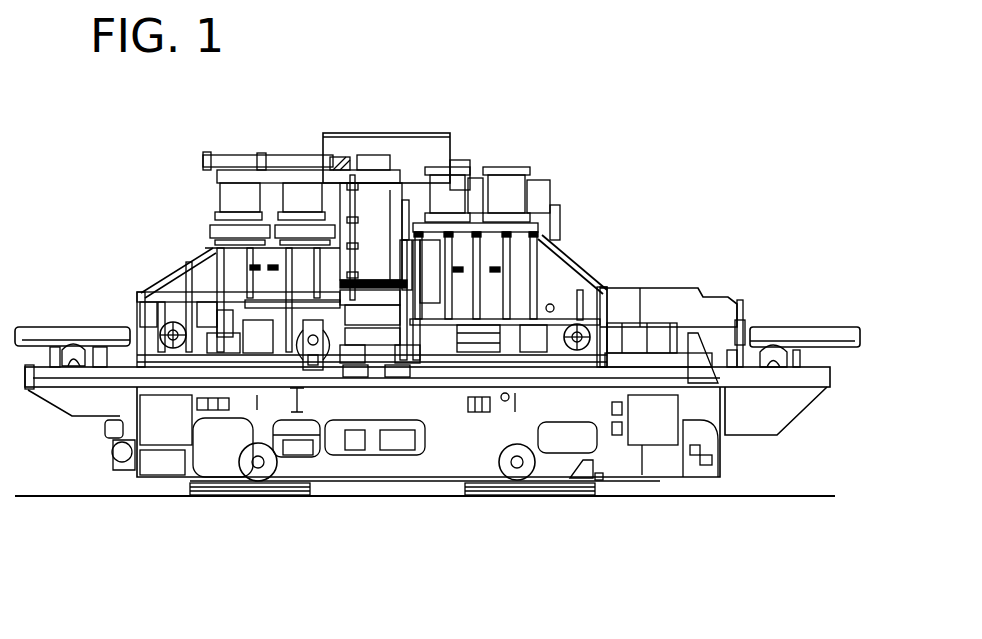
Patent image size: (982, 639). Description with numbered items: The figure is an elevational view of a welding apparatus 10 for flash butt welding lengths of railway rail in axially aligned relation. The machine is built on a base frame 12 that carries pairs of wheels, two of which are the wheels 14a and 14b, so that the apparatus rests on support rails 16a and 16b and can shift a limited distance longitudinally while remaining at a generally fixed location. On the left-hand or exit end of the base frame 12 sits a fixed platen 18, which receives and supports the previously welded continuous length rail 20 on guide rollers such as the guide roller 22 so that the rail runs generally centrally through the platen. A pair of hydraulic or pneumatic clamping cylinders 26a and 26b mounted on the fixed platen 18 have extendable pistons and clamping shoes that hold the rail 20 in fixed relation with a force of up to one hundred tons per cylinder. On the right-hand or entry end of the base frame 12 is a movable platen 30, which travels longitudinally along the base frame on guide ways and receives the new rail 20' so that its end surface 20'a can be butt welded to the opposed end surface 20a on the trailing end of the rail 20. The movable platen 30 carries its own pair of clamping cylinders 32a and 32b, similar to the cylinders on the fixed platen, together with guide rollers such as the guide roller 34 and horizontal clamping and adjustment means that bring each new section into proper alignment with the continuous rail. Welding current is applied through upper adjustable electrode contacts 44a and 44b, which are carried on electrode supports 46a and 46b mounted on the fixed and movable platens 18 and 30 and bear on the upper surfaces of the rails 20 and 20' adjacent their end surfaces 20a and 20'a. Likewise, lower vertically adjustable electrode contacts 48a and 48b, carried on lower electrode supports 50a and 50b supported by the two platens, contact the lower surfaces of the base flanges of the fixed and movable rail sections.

The welding apparatus 10 is at (652, 212).
The base frame 12 is at (400, 486).
The wheel 14a is at (257, 474).
The wheel 14b is at (523, 481).
The support rail 16a is at (200, 498).
The support rail 16b is at (488, 496).
The fixed platen 18 is at (170, 260).
The continuous length rail 20 is at (72, 305).
The rail 20' is at (805, 312).
The end surface 20a is at (382, 320).
The end surface 20'a is at (411, 395).
The guide roller 22 is at (75, 345).
The clamping cylinder 26a is at (230, 202).
The clamping cylinder 26b is at (297, 192).
The movable platen 30 is at (572, 242).
The clamping cylinder 32a is at (507, 197).
The clamping cylinder 32b is at (442, 200).
The guide roller 34 is at (767, 350).
The upper adjustable electrode contact 44a is at (355, 318).
The upper adjustable electrode contact 44b is at (350, 318).
The electrode support 46a is at (350, 300).
The electrode support 46b is at (350, 305).
The lower vertically adjustable electrode contact 48a is at (330, 372).
The lower vertically adjustable electrode contact 48b is at (418, 353).
The lower electrode support 50a is at (355, 380).
The lower electrode support 50b is at (400, 377).